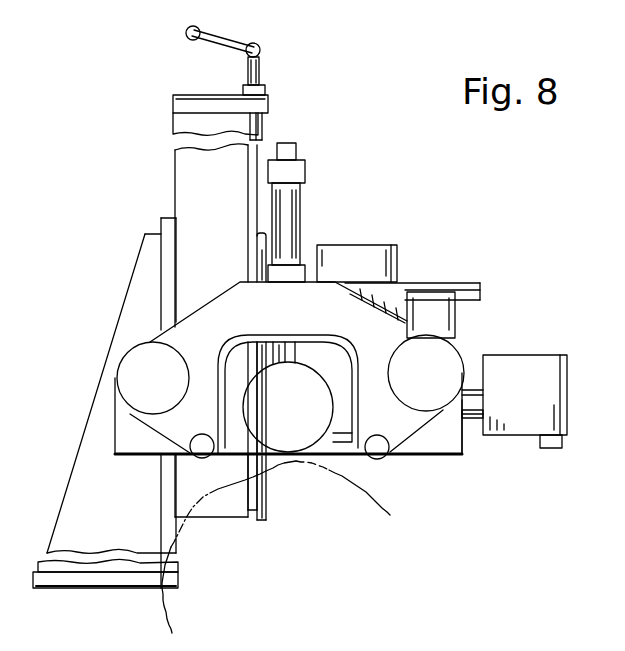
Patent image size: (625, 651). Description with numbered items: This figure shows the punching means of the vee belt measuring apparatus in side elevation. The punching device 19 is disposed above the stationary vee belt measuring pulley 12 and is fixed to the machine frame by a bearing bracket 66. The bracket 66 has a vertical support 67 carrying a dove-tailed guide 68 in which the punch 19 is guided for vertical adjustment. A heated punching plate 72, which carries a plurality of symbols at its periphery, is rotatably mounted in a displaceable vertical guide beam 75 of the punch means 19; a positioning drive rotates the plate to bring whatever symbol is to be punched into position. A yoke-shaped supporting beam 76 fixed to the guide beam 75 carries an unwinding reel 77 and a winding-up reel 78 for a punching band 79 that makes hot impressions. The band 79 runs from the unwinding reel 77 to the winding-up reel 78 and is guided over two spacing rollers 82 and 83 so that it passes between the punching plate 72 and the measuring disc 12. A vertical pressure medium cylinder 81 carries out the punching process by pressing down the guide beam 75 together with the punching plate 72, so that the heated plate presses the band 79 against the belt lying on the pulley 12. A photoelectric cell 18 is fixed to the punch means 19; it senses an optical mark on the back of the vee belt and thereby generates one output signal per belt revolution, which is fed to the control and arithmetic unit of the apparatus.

The vee belt measuring pulley 12 is at (163, 598).
The photoelectric cell 18 is at (548, 398).
The punching device 19 is at (436, 176).
The bearing bracket 66 is at (92, 468).
The vertical support 67 is at (178, 180).
The dove-tailed guide 68 is at (252, 502).
The heated punching plate 72 is at (310, 432).
The vertical guide beam 75 is at (263, 490).
The yoke-shaped supporting beam 76 is at (350, 307).
The unwinding reel 77 is at (132, 364).
The winding-up reel 78 is at (445, 358).
The punching band 79 is at (423, 420).
The vertical pressure medium cylinder 81 is at (288, 202).
The spacing roller 82 is at (202, 452).
The spacing roller 83 is at (383, 450).